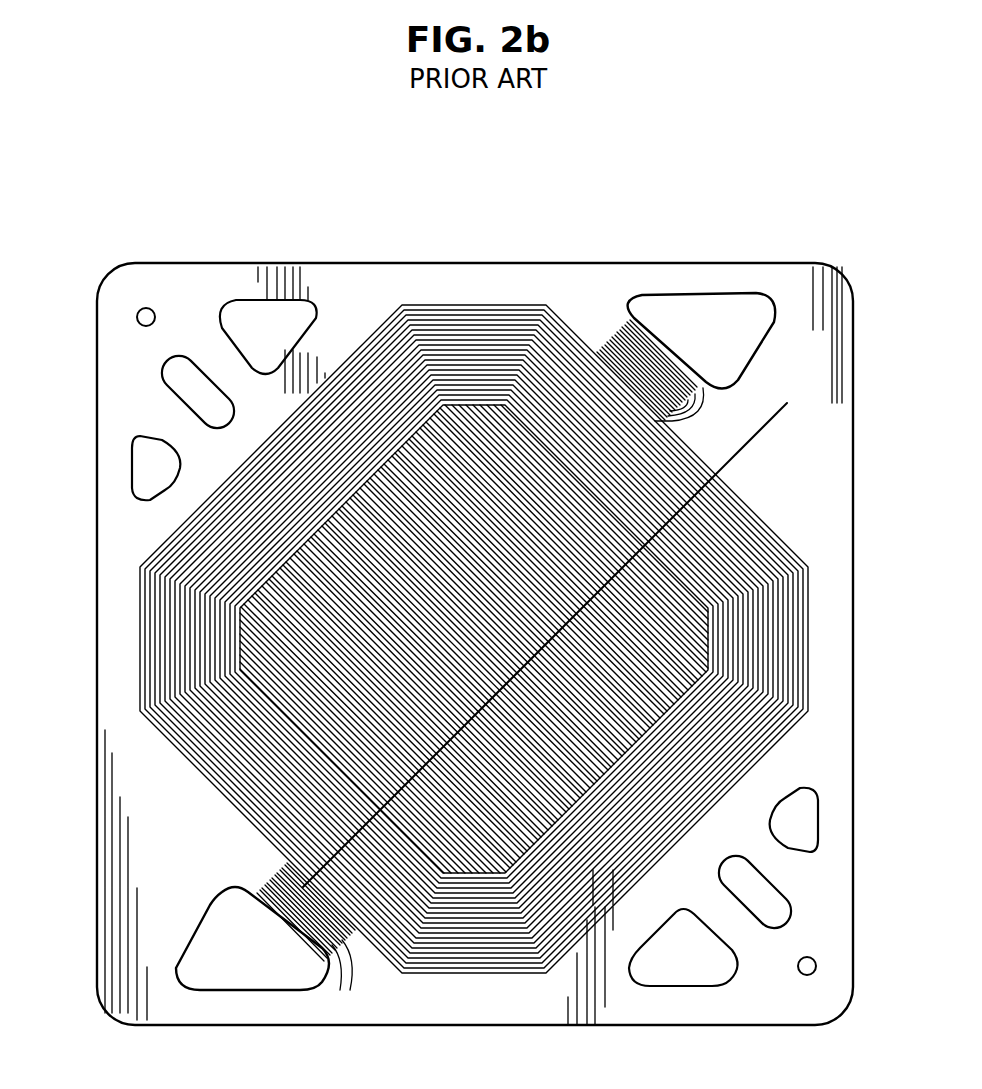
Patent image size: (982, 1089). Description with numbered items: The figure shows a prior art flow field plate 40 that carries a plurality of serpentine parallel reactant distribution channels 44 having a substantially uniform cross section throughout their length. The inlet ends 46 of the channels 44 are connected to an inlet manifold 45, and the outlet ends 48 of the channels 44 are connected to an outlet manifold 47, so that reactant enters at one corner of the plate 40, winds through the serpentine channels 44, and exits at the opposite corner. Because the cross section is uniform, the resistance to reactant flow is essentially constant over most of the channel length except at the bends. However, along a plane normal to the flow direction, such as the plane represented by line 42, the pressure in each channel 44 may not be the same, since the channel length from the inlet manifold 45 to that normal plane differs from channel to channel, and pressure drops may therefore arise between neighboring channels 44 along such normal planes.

The flow field plate 40 is at (86, 703).
The line 42 is at (787, 400).
The serpentine parallel reactant distribution channels 44 is at (752, 569).
The inlet manifold 45 is at (702, 341).
The inlet ends 46 is at (622, 335).
The outlet manifold 47 is at (252, 938).
The outlet ends 48 is at (288, 882).